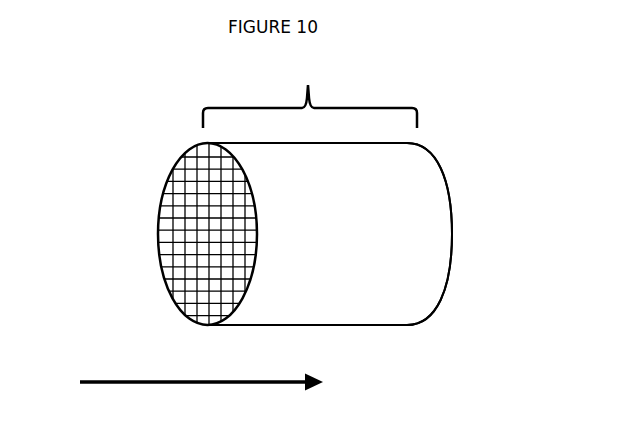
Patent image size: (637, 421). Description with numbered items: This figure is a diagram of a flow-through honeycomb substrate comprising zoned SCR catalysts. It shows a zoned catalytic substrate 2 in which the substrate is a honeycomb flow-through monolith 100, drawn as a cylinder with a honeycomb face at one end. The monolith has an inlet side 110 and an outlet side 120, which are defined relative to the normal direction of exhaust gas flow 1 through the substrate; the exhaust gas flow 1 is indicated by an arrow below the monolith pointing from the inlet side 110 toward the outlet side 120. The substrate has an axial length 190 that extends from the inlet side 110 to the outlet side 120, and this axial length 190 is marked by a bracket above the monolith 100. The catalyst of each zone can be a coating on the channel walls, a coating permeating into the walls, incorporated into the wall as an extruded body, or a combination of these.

The exhaust gas flow 1 is at (120, 382).
The zoned catalytic substrate 2 is at (460, 157).
The honeycomb flow-through monolith 100 is at (353, 292).
The inlet side 110 is at (187, 218).
The outlet side 120 is at (452, 238).
The axial length 190 is at (310, 97).